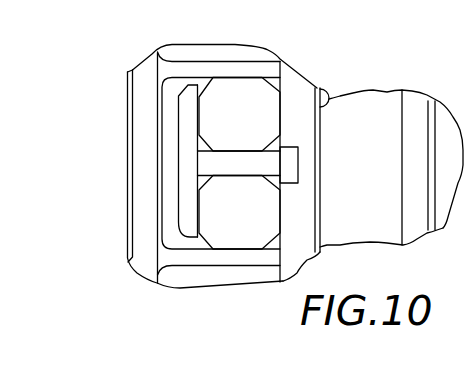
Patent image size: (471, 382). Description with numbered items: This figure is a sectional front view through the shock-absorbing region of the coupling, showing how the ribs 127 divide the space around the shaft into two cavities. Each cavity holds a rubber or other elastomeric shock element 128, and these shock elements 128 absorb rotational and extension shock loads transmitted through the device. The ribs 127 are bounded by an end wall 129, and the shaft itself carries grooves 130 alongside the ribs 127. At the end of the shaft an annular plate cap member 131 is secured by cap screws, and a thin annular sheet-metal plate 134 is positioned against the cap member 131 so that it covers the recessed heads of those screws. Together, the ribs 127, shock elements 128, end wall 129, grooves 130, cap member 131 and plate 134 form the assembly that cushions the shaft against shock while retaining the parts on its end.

The ribs 127 is at (200, 163).
The shock elements 128 is at (230, 88).
The end wall 129 is at (187, 111).
The grooves 130 is at (291, 173).
The annular plate cap member 131 is at (337, 66).
The annular sheet-metal plate 134 is at (321, 211).